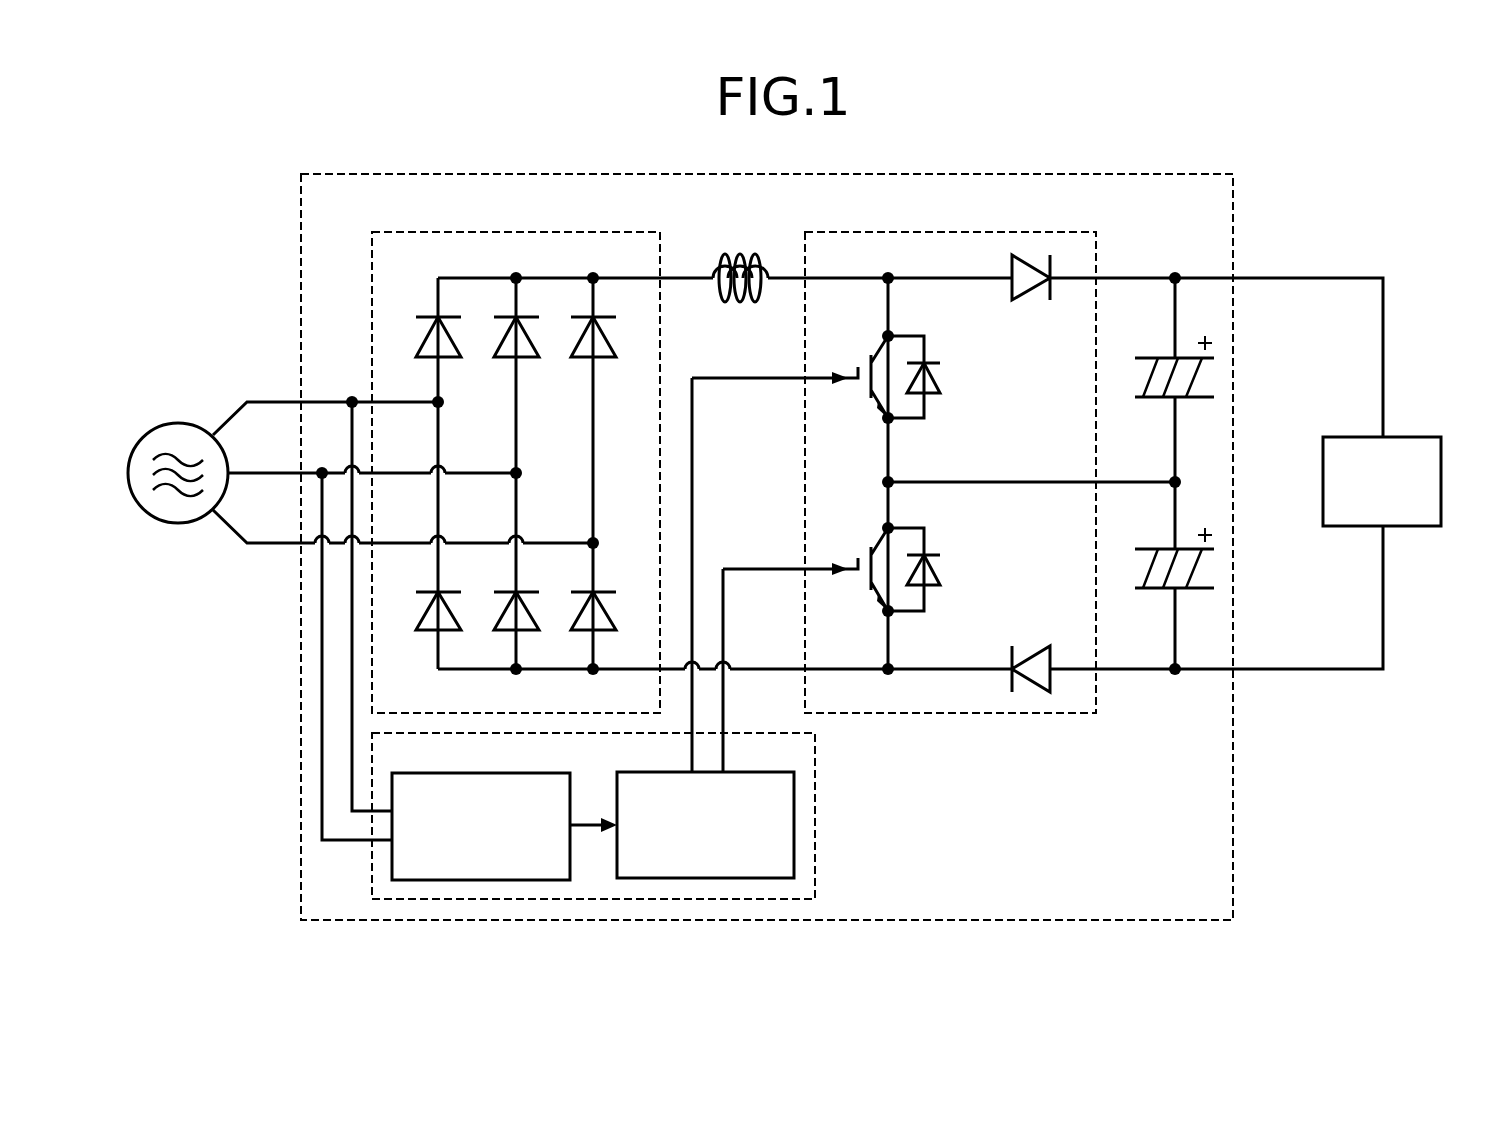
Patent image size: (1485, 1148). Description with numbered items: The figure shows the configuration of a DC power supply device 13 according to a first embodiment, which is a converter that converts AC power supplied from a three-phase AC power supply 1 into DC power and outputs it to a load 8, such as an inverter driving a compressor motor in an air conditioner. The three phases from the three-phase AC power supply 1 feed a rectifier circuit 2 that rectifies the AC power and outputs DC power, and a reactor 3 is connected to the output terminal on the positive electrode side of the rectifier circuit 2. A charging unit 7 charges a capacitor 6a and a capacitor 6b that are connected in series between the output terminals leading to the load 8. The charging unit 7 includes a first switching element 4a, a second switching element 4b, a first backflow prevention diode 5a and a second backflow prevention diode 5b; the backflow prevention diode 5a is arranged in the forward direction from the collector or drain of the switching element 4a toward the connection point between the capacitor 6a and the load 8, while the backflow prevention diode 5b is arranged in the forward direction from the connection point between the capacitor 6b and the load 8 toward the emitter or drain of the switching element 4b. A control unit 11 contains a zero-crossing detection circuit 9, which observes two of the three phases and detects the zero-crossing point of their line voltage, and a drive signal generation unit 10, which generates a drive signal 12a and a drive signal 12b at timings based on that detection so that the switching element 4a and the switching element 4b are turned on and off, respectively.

The three-phase AC power supply 1 is at (178, 428).
The rectifier circuit 2 is at (585, 232).
The reactor 3 is at (748, 254).
The switching element 4a is at (880, 401).
The switching element 4b is at (880, 594).
The backflow prevention diode 5a is at (1038, 296).
The backflow prevention diode 5b is at (1028, 654).
The capacitor 6a is at (1205, 400).
The capacitor 6b is at (1205, 591).
The charging unit 7 is at (1020, 232).
The load 8 is at (1348, 435).
The zero-crossing detection circuit 9 is at (537, 773).
The drive signal generation unit 10 is at (740, 772).
The control unit 11 is at (815, 817).
The drive signal 12a is at (868, 358).
The drive signal 12b is at (868, 551).
The DC power supply device 13 is at (1155, 174).